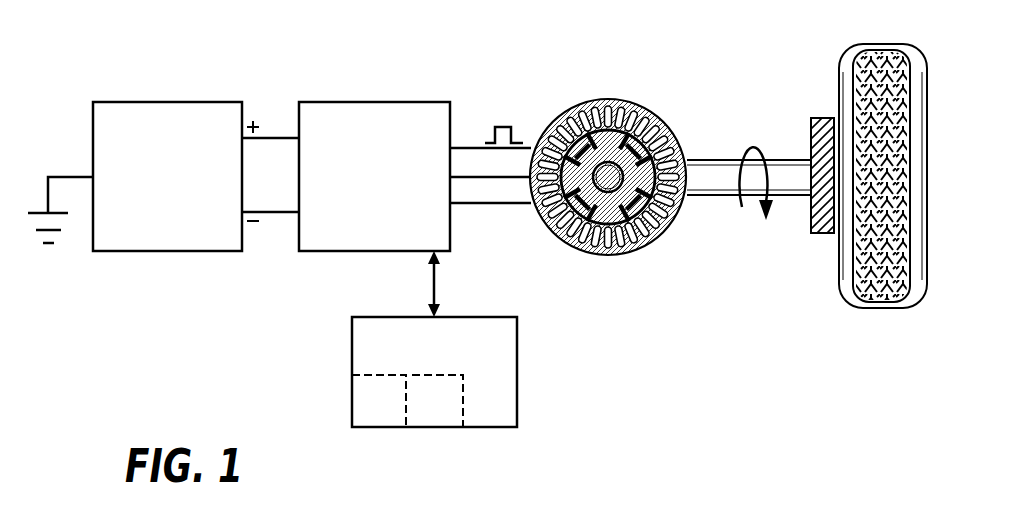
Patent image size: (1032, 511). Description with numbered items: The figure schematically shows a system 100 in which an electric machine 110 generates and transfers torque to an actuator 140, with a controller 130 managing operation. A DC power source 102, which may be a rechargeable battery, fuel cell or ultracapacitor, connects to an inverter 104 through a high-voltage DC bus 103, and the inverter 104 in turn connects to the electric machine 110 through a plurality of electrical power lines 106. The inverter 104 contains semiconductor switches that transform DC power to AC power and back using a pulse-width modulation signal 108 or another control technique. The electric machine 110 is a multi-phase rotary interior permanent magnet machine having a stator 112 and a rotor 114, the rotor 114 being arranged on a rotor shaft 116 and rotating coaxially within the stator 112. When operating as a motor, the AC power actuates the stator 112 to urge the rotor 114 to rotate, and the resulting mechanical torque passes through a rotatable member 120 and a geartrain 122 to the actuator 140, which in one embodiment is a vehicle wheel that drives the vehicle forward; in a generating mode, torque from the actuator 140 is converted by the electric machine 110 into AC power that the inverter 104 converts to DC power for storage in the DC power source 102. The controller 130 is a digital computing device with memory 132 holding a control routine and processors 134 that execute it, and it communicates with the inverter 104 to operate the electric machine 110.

The system 100 is at (218, 68).
The DC power source 102 is at (188, 187).
The high-voltage DC bus 103 is at (257, 122).
The inverter 104 is at (395, 187).
The electrical power lines 106 is at (472, 203).
The pulse-width modulation signal 108 is at (503, 127).
The electric machine 110 is at (643, 133).
The stator 112 is at (583, 100).
The rotor 114 is at (632, 137).
The rotor shaft 116 is at (625, 172).
The rotatable member 120 is at (777, 158).
The geartrain 122 is at (823, 233).
The controller 130 is at (455, 352).
The memory 132 is at (385, 403).
The processors 134 is at (437, 403).
The actuator 140 is at (877, 308).